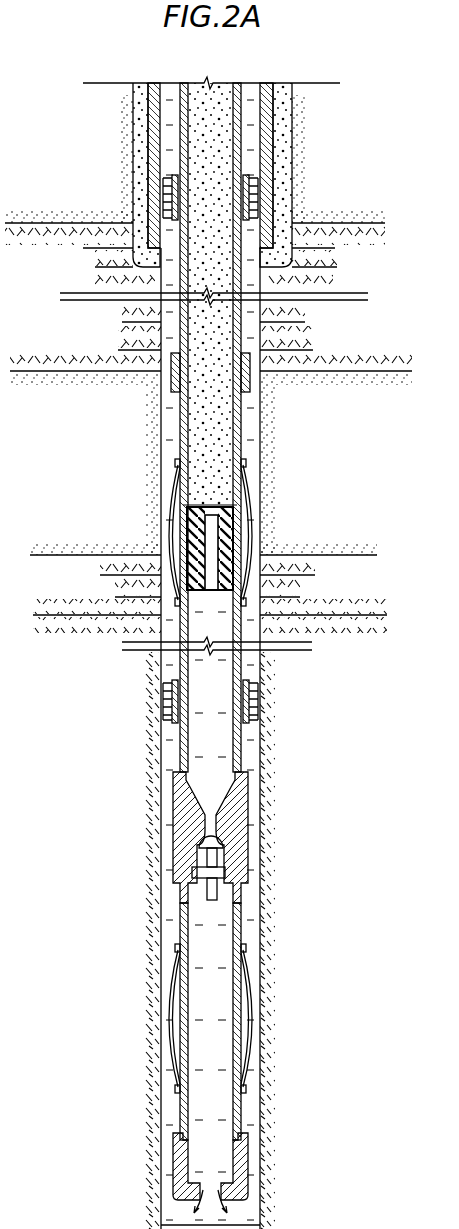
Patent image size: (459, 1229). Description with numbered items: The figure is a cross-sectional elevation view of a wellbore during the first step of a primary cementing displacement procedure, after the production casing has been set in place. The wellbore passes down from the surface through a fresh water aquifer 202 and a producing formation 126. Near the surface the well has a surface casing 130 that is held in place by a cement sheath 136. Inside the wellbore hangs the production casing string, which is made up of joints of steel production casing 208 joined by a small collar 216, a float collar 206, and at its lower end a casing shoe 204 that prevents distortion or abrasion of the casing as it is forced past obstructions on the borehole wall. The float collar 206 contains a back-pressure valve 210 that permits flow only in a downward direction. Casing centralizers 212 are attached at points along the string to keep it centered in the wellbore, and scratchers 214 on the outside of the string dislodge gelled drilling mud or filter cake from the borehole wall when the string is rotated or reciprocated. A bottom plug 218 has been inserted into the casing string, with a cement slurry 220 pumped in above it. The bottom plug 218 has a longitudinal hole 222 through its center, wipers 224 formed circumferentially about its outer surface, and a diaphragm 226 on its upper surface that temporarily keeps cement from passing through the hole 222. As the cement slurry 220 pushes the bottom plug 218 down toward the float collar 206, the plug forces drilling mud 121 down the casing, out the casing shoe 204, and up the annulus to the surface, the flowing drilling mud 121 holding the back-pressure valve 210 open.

The drilling mud 121 is at (172, 760).
The producing formation 126 is at (268, 470).
The surface casing 130 is at (263, 112).
The cement sheath 136 is at (283, 162).
The fresh water aquifer 202 is at (305, 210).
The casing shoe 204 is at (252, 1162).
The float collar 206 is at (240, 812).
The production casing 208 is at (180, 109).
The back-pressure valve 210 is at (223, 846).
The casing centralizers 212 is at (173, 565).
The scratchers 214 is at (165, 190).
The collar 216 is at (250, 385).
The bottom plug 218 is at (230, 578).
The cement slurry 220 is at (222, 432).
The longitudinal hole 222 is at (215, 592).
The wipers 224 is at (233, 530).
The diaphragm 226 is at (210, 505).